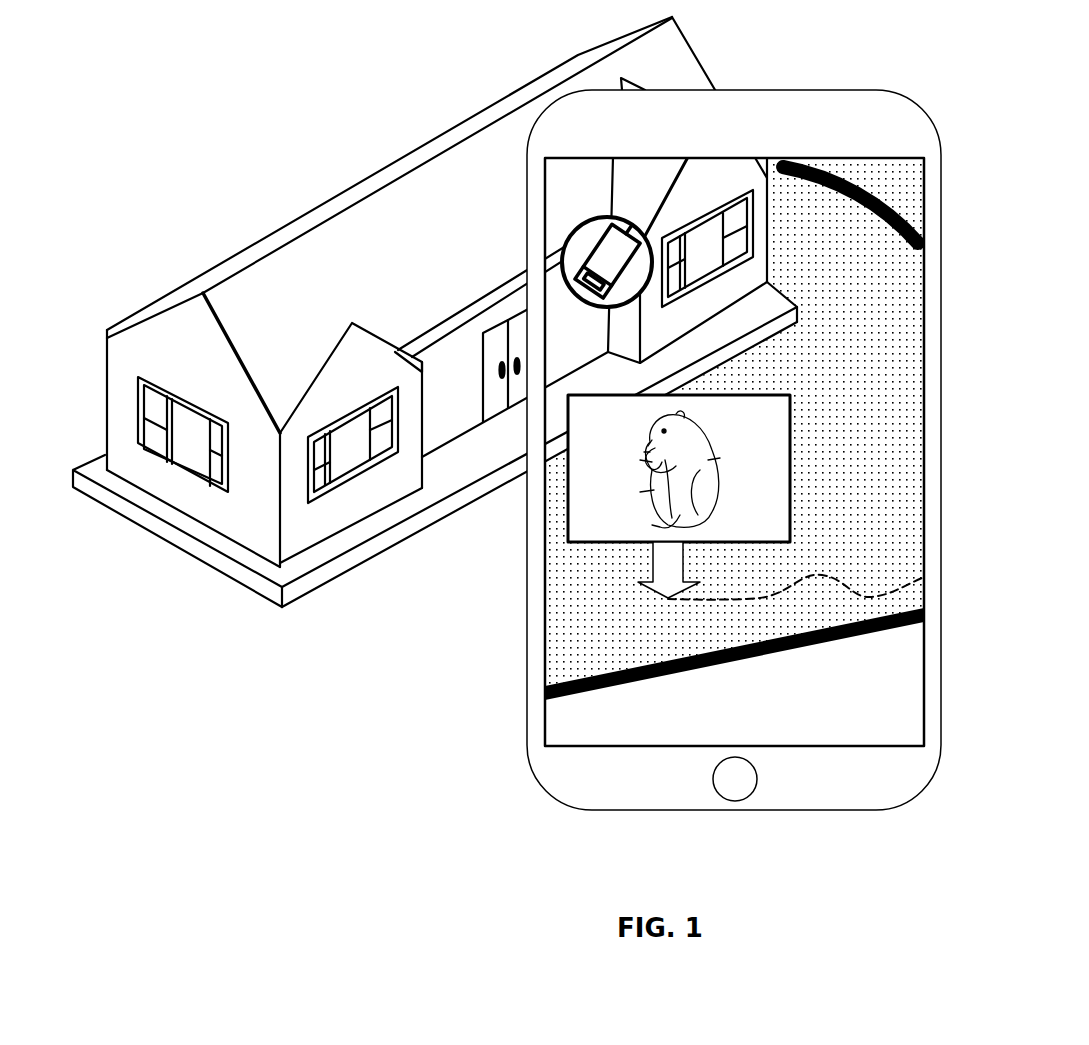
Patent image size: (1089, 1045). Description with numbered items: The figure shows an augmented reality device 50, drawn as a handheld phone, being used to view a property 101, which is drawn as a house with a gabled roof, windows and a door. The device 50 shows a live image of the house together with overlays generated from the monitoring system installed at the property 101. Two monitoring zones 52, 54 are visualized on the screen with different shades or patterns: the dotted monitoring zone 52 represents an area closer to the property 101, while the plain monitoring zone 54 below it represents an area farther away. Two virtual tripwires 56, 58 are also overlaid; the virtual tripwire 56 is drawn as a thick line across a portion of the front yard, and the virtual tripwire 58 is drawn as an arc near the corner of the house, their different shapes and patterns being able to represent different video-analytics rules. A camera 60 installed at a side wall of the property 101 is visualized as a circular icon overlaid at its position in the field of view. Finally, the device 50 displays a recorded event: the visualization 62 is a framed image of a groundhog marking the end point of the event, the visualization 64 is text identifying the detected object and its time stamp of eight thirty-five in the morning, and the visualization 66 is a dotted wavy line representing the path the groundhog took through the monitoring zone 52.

The property 101 is at (433, 133).
The augmented reality device 50 is at (917, 120).
The monitoring zone 52 is at (600, 628).
The monitoring zone 54 is at (647, 711).
The virtual tripwire 56 is at (873, 633).
The virtual tripwire 58 is at (892, 202).
The camera 60 is at (636, 222).
The visualization 62 is at (567, 542).
The visualization 64 is at (868, 443).
The visualization 66 is at (848, 587).